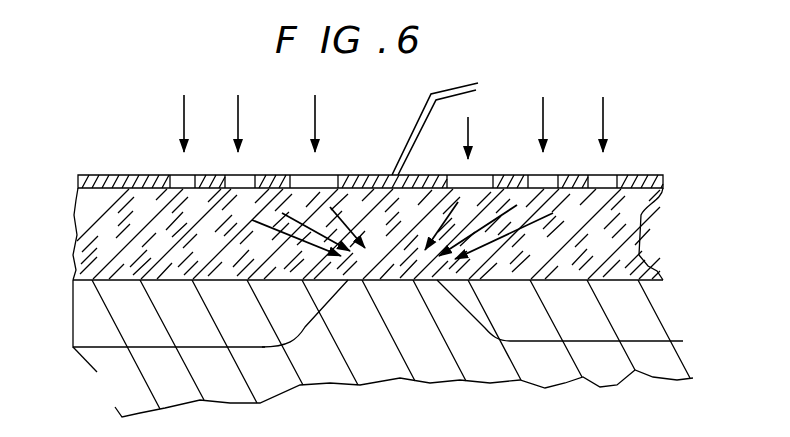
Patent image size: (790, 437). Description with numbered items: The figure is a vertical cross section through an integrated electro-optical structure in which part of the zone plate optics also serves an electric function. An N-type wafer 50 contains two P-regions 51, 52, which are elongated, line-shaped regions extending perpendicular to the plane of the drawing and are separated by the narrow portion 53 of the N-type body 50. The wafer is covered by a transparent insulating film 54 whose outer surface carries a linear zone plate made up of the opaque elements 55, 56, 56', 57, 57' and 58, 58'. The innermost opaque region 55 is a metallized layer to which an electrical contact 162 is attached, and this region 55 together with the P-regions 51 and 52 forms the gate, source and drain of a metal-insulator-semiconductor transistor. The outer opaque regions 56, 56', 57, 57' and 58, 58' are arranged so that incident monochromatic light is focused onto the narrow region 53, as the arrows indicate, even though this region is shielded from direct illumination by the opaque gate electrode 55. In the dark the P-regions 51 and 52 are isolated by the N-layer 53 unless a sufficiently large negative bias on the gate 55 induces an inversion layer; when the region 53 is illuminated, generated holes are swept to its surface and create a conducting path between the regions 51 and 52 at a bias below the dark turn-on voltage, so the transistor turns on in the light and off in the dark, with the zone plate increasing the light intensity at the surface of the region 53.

The N-type wafer 50 is at (167, 388).
The P-region 51 is at (305, 313).
The P-region 52 is at (483, 310).
The narrow portion of the N-type body 53 is at (398, 300).
The transparent insulating film 54 is at (368, 234).
The innermost opaque region 55 is at (370, 178).
The opaque element 56 is at (272, 168).
The opaque element 57 is at (211, 168).
The opaque element 58 is at (126, 168).
The opaque element 56' is at (510, 166).
The opaque element 57' is at (574, 166).
The opaque element 58' is at (640, 166).
The electrical contact 162 is at (455, 103).